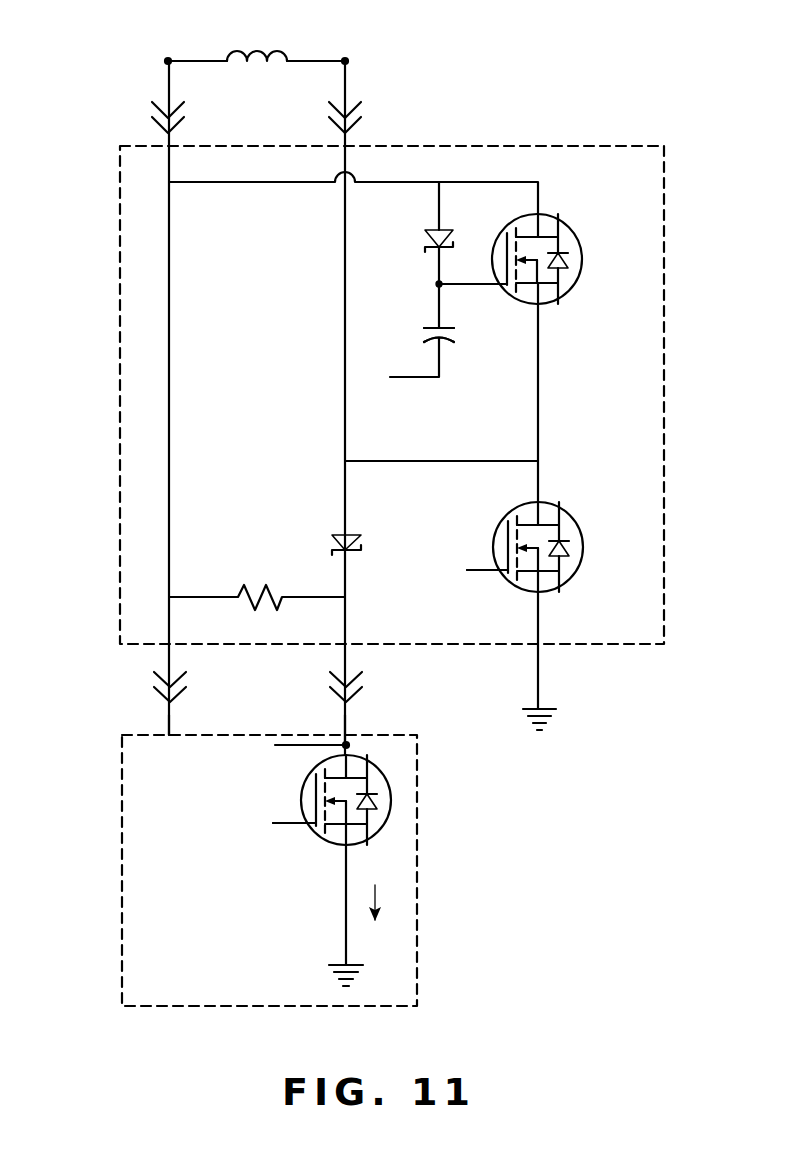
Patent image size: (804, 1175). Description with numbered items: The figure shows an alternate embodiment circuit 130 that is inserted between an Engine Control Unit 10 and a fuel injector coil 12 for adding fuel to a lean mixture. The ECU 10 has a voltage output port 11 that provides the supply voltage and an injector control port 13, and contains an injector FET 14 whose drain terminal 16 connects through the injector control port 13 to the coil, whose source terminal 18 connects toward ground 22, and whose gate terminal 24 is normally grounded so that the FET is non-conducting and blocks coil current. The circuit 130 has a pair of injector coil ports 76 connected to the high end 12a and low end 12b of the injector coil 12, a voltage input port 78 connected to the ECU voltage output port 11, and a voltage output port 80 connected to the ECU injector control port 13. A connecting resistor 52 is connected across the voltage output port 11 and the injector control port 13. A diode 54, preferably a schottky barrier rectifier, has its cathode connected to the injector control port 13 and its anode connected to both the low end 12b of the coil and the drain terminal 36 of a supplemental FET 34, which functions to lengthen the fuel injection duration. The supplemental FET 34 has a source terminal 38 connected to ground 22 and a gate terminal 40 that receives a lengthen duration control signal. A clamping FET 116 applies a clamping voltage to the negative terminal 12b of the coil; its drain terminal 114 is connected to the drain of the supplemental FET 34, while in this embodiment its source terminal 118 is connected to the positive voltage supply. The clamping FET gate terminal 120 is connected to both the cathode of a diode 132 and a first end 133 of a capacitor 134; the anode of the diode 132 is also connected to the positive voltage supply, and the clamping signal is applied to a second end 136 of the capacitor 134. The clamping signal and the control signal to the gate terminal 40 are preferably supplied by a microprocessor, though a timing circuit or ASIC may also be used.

The Engine Control Unit (ECU) 10 is at (120, 862).
The voltage output port 11 is at (170, 733).
The fuel injector coil 12 is at (253, 72).
The high end of fuel injector coil 12a is at (168, 61).
The low end of fuel injector coil 12b is at (345, 61).
The ECU injector control port 13 is at (346, 730).
The injector Field Effect Transistor (FET) 14 is at (392, 806).
The drain terminal 16 is at (346, 746).
The source terminal 18 is at (348, 846).
The ground 22 is at (562, 729).
The gate terminal 24 is at (312, 828).
The supplemental FET 34 is at (582, 527).
The drain terminal 36 is at (538, 500).
The source terminal 38 is at (542, 592).
The gate terminal 40 is at (500, 570).
The connecting resistor 52 is at (252, 575).
The diode 54 is at (324, 522).
The injector coil ports 76 is at (168, 147).
The voltage input port 78 is at (170, 645).
The voltage output port 80 is at (346, 648).
The drain terminal of clamping FET 114 is at (540, 305).
The clamping FET 116 is at (582, 260).
The source terminal of clamping FET 118 is at (538, 213).
The gate terminal of clamping FET 120 is at (500, 285).
The alternate embodiment circuit 130 is at (512, 147).
The diode 132 is at (428, 238).
The first end of capacitor 133 is at (438, 328).
The capacitor 134 is at (424, 340).
The second end of capacitor 136 is at (442, 338).